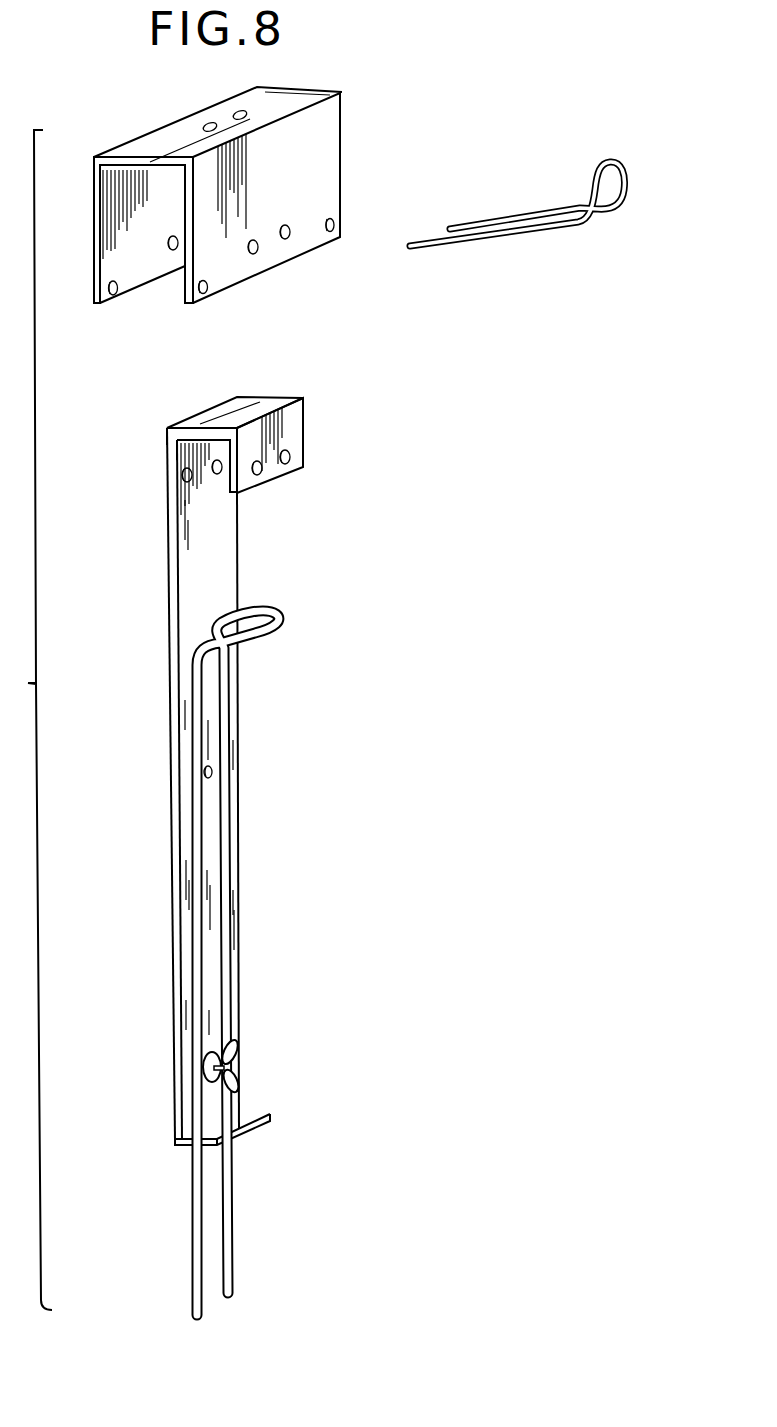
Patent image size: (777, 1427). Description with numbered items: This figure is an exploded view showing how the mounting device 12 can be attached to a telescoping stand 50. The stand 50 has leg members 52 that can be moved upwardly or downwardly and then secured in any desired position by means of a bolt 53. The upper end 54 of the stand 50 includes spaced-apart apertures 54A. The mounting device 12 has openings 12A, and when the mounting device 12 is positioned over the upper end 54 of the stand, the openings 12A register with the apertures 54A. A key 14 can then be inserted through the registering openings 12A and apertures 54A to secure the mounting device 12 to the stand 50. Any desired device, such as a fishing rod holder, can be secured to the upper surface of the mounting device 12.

The mounting device 12 is at (340, 162).
The openings 12A is at (286, 238).
The key 14 is at (627, 178).
The telescoping stand 50 is at (160, 583).
The leg members 52 is at (281, 637).
The bolt 53 is at (236, 1058).
The upper end 54 is at (307, 427).
The apertures 54A is at (260, 473).